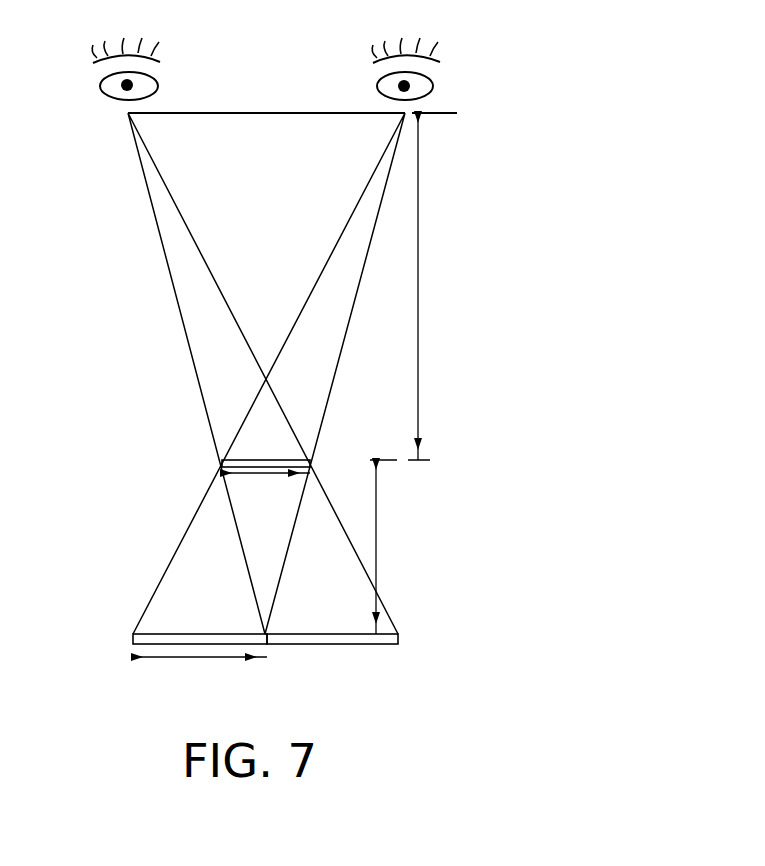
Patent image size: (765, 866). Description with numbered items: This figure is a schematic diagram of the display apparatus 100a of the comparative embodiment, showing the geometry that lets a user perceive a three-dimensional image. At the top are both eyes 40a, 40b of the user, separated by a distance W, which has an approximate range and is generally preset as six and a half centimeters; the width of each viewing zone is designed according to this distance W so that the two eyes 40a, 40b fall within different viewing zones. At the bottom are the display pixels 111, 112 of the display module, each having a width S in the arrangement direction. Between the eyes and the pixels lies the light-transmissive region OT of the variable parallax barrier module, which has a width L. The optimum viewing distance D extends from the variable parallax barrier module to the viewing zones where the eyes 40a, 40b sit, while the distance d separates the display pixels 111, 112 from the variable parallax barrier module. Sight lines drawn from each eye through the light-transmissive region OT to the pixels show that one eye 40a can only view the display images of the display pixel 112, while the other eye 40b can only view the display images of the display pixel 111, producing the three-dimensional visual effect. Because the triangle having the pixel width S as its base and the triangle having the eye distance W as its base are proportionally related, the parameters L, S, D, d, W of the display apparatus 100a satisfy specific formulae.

The eye 40a is at (105, 53).
The eye 40b is at (440, 52).
The distance between both eyes W is at (277, 77).
The optimum viewing distance D is at (431, 286).
The distance between display pixels and variable parallax barrier module d is at (390, 547).
The light-transmissive region OT is at (222, 465).
The width of light-transmissive region L is at (267, 476).
The display pixel 111 is at (133, 640).
The display pixel 112 is at (398, 640).
The width of display pixel S is at (204, 660).
The display apparatus 100a is at (623, 708).